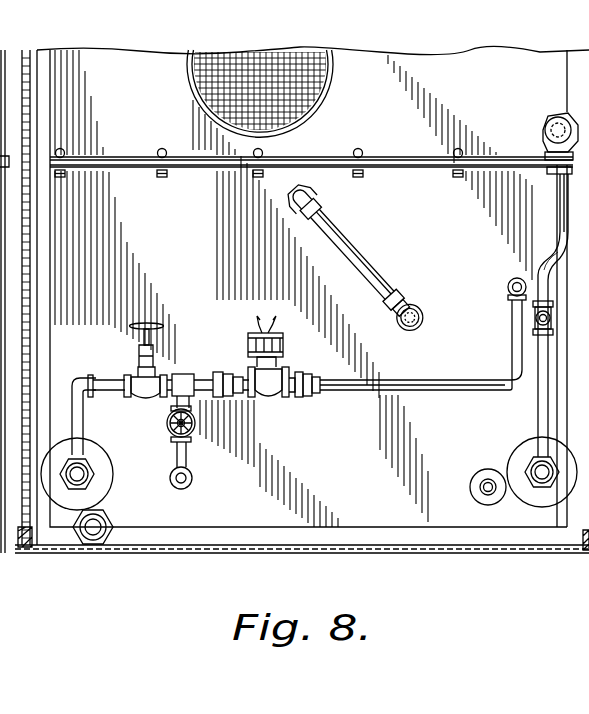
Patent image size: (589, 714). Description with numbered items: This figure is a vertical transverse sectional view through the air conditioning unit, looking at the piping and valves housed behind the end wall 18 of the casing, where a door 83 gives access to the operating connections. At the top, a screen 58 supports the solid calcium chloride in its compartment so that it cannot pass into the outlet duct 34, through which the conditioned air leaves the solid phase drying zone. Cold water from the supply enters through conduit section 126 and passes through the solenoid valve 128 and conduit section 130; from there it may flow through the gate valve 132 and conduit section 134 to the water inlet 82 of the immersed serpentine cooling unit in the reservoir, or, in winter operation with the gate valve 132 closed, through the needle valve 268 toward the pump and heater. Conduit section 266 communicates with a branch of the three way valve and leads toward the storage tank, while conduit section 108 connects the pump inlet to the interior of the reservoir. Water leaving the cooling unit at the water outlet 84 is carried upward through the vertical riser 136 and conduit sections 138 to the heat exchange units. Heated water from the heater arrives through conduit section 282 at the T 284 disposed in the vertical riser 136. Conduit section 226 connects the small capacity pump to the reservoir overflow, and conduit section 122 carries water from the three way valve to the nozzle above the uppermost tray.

The end wall 18 is at (412, 70).
The door 83 is at (23, 64).
The screen 58 is at (216, 55).
The outlet duct 34 is at (328, 90).
The conduit sections 138 is at (543, 128).
The vertical riser 136 is at (560, 212).
The T 284 is at (548, 282).
The conduit section 282 is at (530, 330).
The water outlet 84 is at (530, 473).
The conduit section 226 is at (475, 485).
The conduit section 122 is at (368, 265).
The conduit section 134 is at (105, 378).
The water inlet 82 is at (95, 475).
The conduit section 108 is at (108, 519).
The gate valve 132 is at (150, 325).
The needle valve 268 is at (197, 430).
The conduit section 266 is at (193, 480).
The conduit section 130 is at (207, 373).
The solenoid valve 128 is at (276, 409).
The conduit section 126 is at (508, 285).